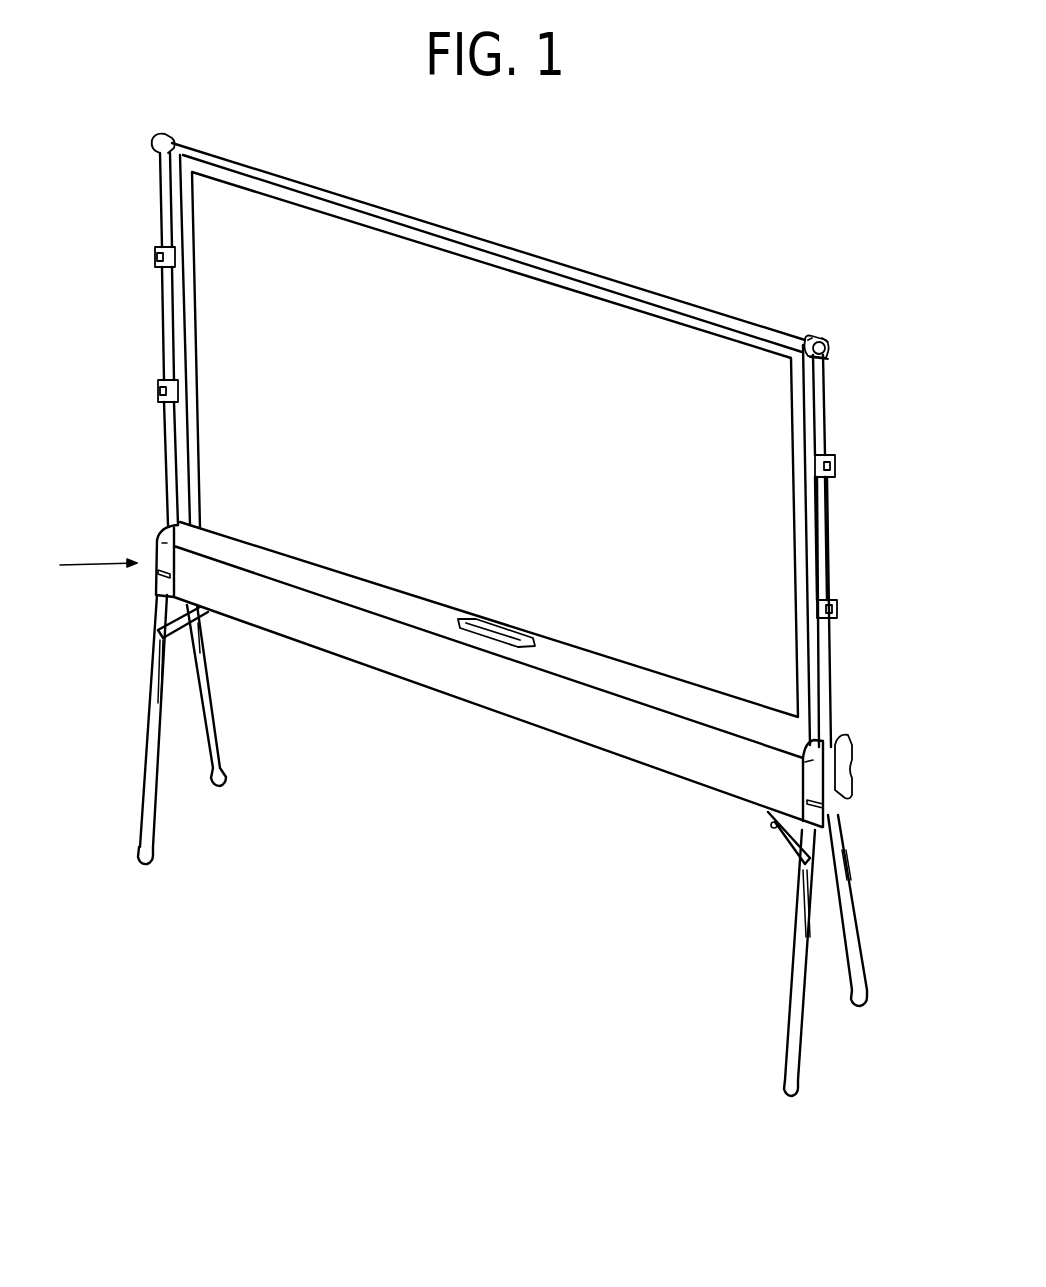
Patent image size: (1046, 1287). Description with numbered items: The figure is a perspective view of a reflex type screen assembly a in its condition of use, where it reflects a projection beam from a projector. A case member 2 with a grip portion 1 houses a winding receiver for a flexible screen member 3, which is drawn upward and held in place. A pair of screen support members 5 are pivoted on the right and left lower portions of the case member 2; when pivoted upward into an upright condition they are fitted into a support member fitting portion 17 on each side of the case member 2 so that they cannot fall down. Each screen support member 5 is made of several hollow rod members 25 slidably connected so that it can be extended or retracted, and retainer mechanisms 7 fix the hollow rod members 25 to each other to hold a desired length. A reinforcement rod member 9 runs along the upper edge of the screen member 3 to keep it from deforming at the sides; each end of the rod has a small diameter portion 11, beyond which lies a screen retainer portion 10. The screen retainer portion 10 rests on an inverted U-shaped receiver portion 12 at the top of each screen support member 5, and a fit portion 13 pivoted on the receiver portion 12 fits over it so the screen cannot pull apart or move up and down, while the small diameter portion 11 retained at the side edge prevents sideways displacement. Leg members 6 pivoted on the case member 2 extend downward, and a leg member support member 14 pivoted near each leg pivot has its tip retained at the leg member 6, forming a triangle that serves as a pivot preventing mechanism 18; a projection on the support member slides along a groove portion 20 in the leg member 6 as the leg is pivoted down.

The grip portion 1 is at (512, 626).
The case member 2 is at (388, 668).
The screen member 3 is at (367, 237).
The screen support member 5 is at (162, 195).
The leg member 6 is at (858, 952).
The retainer mechanism 7 is at (838, 608).
The reinforcement rod member 9 is at (640, 286).
The screen retainer portion 10 is at (832, 345).
The small diameter portion 11 is at (816, 336).
The receiver portion 12 is at (828, 358).
The fit portion 13 is at (825, 340).
The leg member support member 14 is at (785, 822).
The support member fitting portion 17 is at (850, 750).
The pivot preventing mechanism 18 is at (772, 828).
The groove portion 20 is at (850, 858).
The hollow rod member 25 is at (162, 315).
The screen assembly a is at (88, 566).